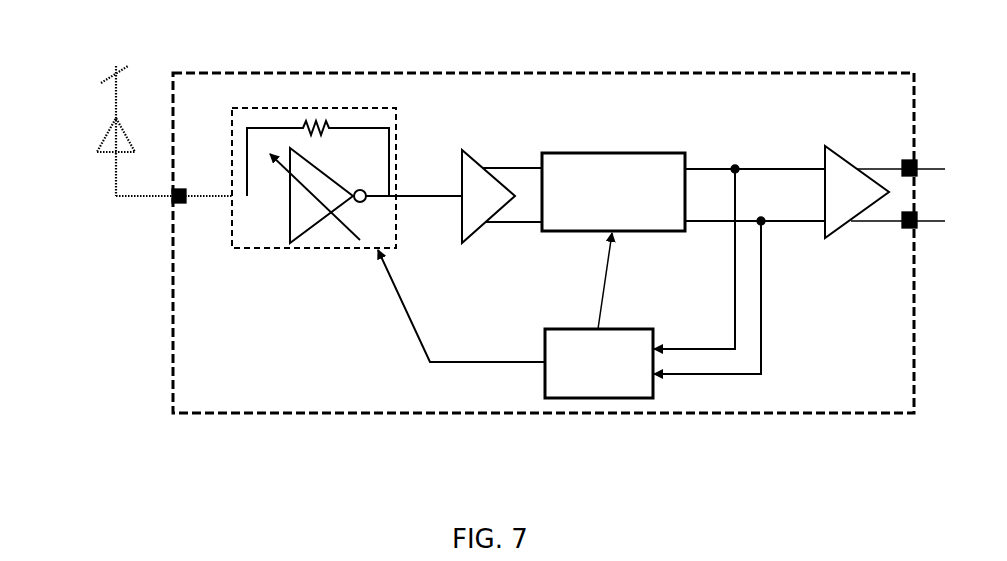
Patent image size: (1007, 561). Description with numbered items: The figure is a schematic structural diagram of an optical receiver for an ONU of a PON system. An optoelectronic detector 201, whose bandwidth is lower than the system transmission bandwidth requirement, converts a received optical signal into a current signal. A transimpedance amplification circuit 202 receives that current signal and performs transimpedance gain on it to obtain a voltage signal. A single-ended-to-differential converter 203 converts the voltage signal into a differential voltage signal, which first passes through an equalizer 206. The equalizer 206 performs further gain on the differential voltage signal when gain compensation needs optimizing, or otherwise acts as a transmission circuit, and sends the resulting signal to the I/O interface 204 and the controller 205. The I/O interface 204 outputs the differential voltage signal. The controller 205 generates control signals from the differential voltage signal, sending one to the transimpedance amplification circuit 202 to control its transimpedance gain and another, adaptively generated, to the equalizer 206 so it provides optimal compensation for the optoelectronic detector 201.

The optoelectronic detector 201 is at (110, 128).
The transimpedance amplification circuit 202 is at (310, 108).
The single-ended-to-differential converter 203 is at (478, 158).
The I/O interface 204 is at (840, 158).
The controller 205 is at (597, 398).
The equalizer 206 is at (632, 153).